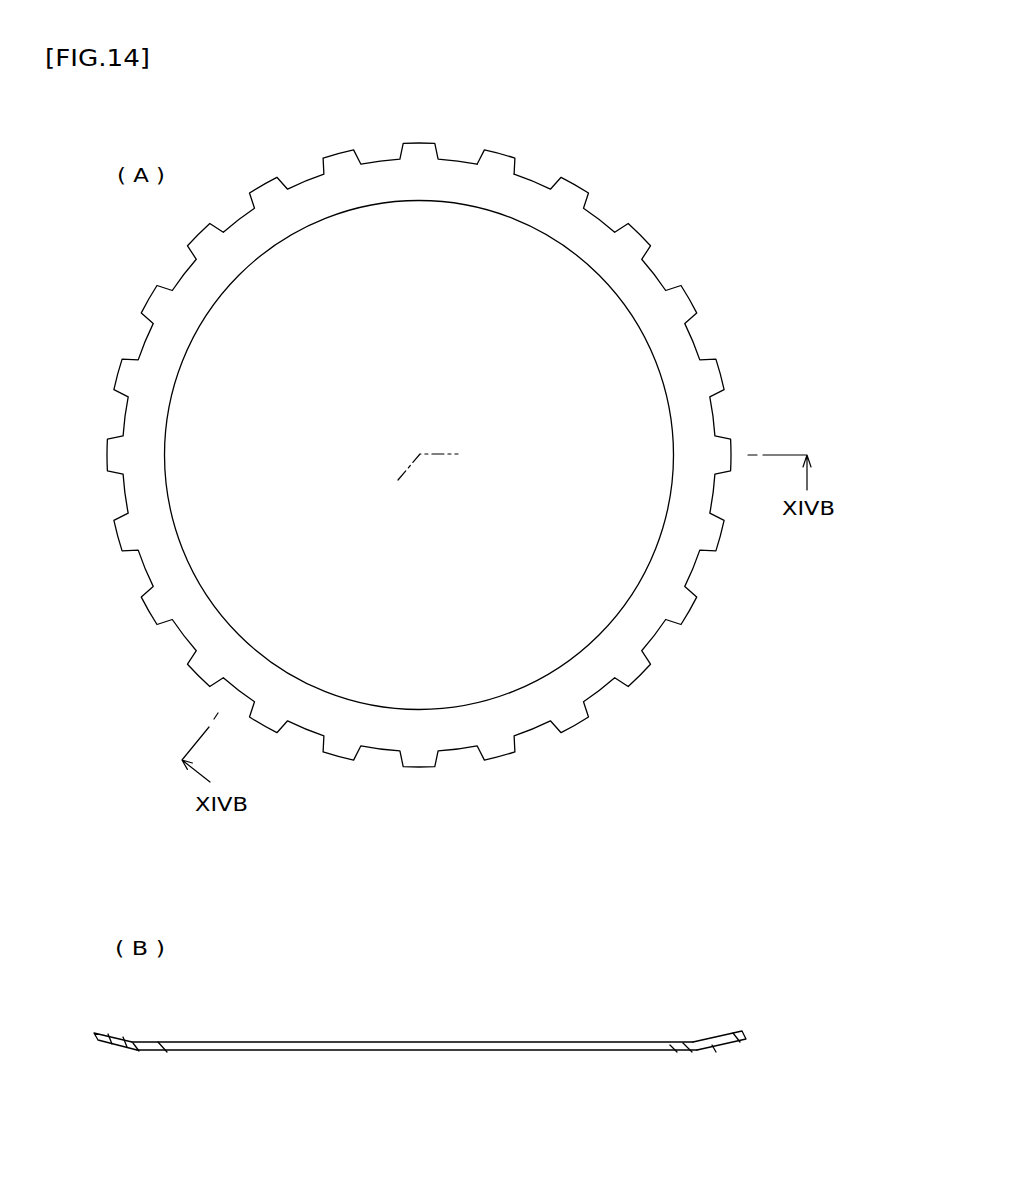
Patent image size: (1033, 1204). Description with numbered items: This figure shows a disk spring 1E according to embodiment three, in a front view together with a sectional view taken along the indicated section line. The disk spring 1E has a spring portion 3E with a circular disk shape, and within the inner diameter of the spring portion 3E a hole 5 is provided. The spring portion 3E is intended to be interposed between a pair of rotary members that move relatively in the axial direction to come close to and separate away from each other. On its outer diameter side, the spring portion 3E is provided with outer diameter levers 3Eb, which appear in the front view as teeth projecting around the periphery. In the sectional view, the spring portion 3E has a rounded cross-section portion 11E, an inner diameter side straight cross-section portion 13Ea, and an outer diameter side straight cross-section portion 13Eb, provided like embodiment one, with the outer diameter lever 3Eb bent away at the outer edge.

The disk spring 1E is at (654, 188).
The spring portion 3E is at (650, 282).
The outer diameter lever 3Eb is at (498, 148).
The hole 5 is at (538, 232).
The rounded cross-section portion 11E is at (697, 1055).
The inner diameter side straight cross-section portion 13Ea is at (677, 1053).
The outer diameter side straight cross-section portion 13Eb is at (712, 1053).